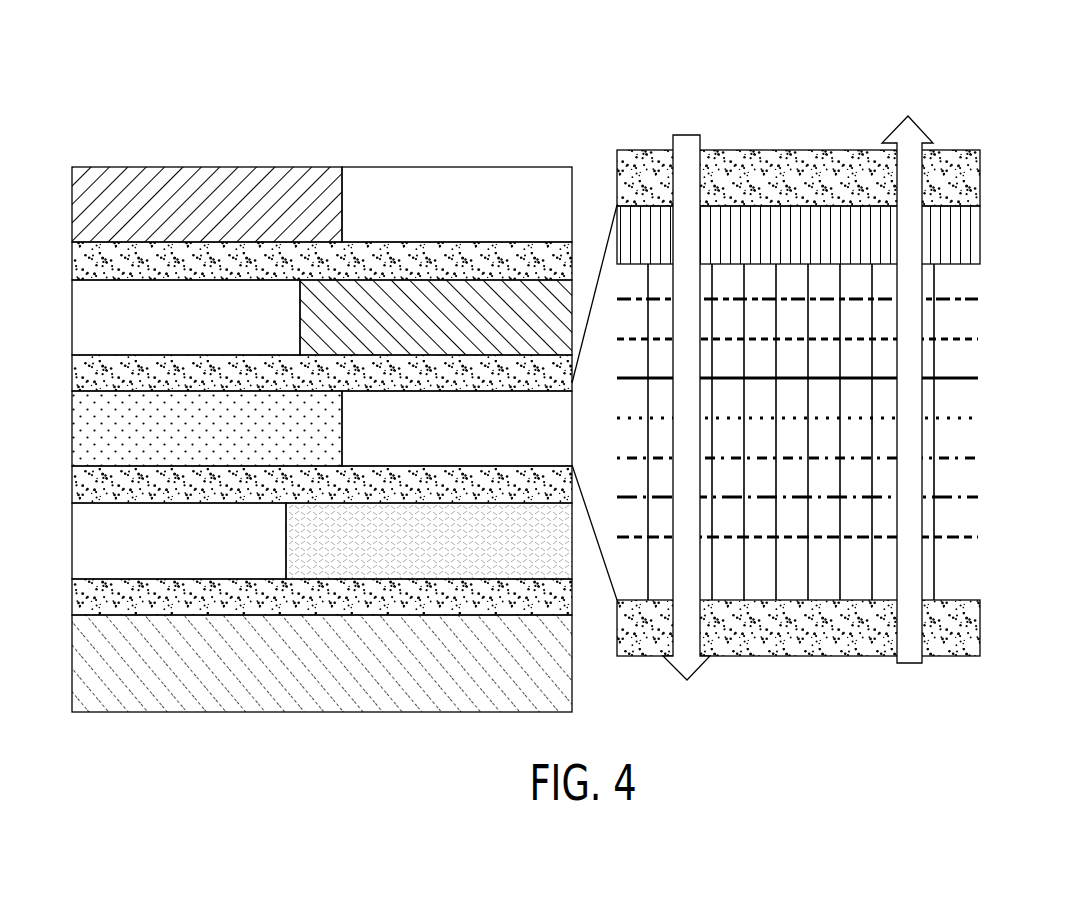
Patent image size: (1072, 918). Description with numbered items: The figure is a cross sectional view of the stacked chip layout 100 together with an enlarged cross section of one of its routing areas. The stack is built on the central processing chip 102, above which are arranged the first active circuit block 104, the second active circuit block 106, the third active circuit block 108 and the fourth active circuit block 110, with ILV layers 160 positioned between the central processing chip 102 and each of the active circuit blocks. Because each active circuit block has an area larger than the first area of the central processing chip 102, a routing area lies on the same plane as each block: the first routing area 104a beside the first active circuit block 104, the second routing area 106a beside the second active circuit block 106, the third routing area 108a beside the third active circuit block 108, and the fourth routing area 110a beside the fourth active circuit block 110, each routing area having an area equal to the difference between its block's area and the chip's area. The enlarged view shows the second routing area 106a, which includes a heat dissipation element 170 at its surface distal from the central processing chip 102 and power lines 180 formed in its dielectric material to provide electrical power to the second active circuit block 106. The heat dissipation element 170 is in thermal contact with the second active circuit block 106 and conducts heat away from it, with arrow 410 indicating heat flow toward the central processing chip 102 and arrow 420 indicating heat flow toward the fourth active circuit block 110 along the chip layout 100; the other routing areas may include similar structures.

The stacked chip layout 100 is at (1028, 96).
The central processing chip 102 is at (302, 670).
The first active circuit block 104 is at (416, 553).
The first routing area 104a is at (157, 553).
The second active circuit block 106 is at (193, 440).
The second routing area 106a is at (438, 440).
The third active circuit block 108 is at (423, 329).
The third routing area 108a is at (166, 329).
The fourth active circuit block 110 is at (193, 216).
The fourth routing area 110a is at (438, 216).
The ILV layers 160 is at (302, 271).
The heat dissipation element 170 is at (781, 244).
The power lines 180 is at (992, 290).
The arrow 410 is at (906, 296).
The arrow 420 is at (688, 148).